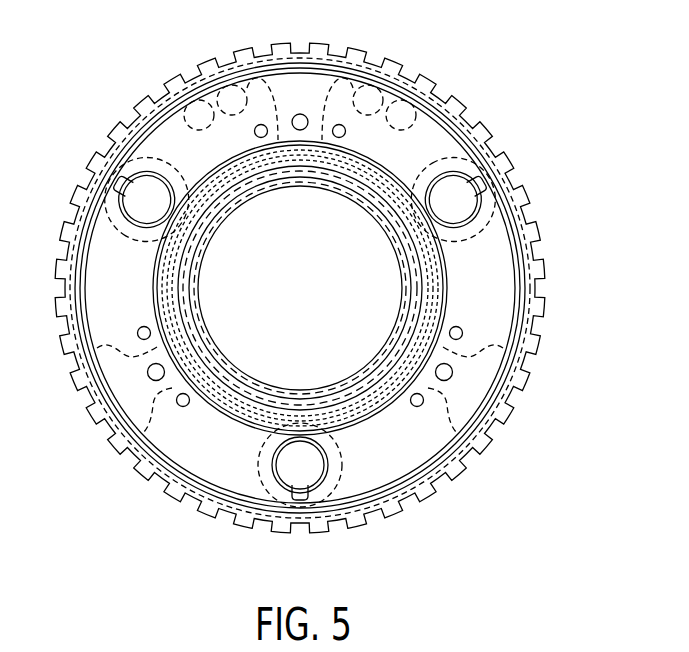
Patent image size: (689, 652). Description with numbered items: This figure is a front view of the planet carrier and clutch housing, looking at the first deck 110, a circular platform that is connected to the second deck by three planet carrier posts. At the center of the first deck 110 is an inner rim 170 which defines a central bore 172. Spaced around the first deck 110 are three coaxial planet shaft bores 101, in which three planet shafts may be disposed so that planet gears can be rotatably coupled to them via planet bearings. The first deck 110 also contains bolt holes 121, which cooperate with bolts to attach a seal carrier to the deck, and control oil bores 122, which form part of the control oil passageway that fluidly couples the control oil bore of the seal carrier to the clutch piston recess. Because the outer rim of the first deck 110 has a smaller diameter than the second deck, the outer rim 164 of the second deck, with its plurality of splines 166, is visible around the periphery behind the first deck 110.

The planet shaft bores 101 is at (147, 200).
The first deck 110 is at (310, 291).
The bolt holes 121 is at (346, 131).
The control oil bores 122 is at (302, 113).
The outer rim 164 is at (482, 443).
The splines 166 is at (523, 393).
The inner rim 170 is at (197, 310).
The central bore 172 is at (368, 325).